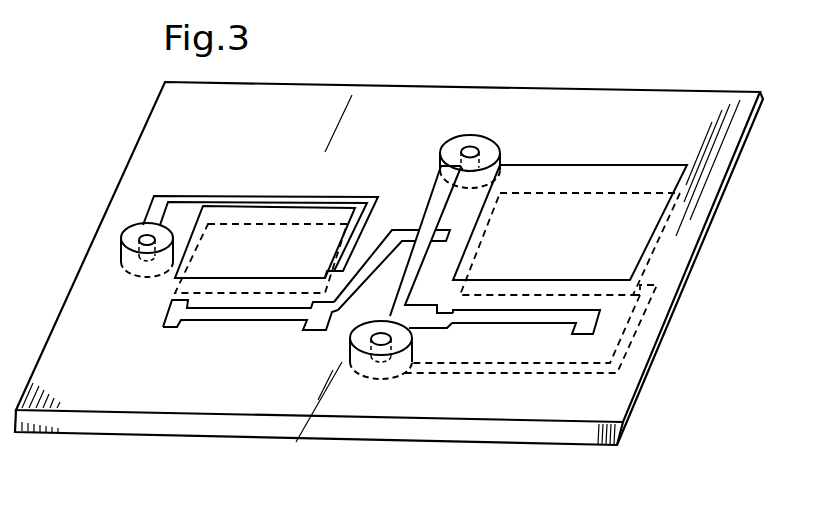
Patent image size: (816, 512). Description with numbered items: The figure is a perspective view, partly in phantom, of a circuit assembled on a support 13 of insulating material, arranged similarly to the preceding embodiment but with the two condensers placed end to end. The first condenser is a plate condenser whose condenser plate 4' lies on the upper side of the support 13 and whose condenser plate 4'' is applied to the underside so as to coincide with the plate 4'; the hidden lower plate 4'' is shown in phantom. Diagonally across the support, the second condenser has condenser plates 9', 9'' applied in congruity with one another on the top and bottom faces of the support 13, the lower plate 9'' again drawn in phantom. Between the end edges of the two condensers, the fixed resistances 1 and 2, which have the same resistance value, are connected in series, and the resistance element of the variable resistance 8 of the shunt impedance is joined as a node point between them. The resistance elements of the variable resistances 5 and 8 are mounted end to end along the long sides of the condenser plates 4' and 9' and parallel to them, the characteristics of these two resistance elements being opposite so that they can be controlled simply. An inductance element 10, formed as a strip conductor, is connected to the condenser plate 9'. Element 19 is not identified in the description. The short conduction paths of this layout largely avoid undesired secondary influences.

The fixed resistance 1 is at (415, 267).
The fixed resistance 2 is at (438, 200).
The condenser plate 4' is at (570, 198).
The condenser plate 4'' is at (572, 283).
The variable resistance 5 is at (520, 323).
The variable resistance 8 is at (270, 316).
The condenser plate 9' is at (265, 212).
The condenser plate 9'' is at (261, 295).
The inductance element 10 is at (203, 196).
The support 13 is at (496, 449).
The crossover connector 19 is at (383, 248).